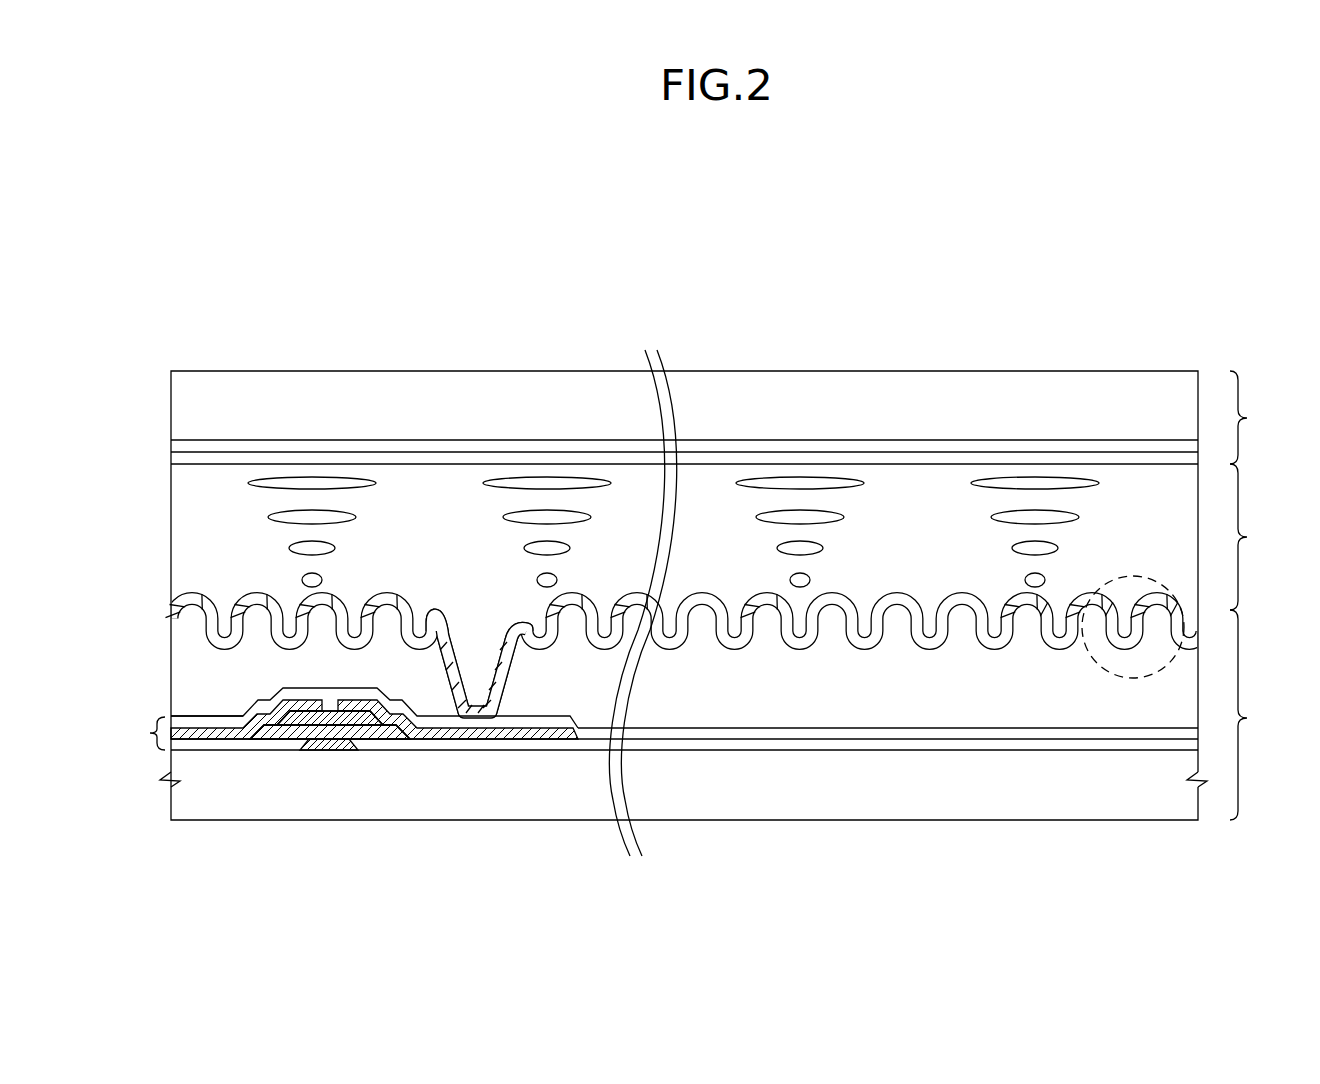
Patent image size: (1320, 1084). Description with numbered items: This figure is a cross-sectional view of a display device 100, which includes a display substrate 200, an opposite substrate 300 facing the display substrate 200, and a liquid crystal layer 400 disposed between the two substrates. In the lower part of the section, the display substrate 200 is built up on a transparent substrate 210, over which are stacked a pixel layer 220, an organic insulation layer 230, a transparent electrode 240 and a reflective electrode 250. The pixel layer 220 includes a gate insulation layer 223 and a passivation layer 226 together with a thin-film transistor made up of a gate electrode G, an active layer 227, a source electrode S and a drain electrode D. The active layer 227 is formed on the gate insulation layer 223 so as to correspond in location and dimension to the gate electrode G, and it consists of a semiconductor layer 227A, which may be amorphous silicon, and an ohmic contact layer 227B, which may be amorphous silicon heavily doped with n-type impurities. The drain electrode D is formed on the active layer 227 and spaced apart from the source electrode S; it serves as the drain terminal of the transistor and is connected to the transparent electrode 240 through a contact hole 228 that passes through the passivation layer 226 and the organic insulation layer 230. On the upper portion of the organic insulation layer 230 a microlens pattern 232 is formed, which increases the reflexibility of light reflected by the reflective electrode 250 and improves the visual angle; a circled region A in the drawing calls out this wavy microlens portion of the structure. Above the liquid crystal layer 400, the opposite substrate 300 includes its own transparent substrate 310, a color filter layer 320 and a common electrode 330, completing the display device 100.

The display device 100 is at (693, 293).
The display substrate 200 is at (726, 715).
The transparent substrate 210 is at (1140, 775).
The pixel layer 220 is at (177, 733).
The gate insulation layer 223 is at (747, 742).
The passivation layer 226 is at (817, 732).
The active layer 227 is at (333, 857).
The semiconductor layer 227A is at (368, 740).
The ohmic contact layer 227B is at (380, 728).
The contact hole 228 is at (478, 632).
The organic insulation layer 230 is at (889, 710).
The microlens pattern 232 is at (1095, 643).
The transparent electrode 240 is at (962, 637).
The reflective electrode 250 is at (1037, 637).
The opposite substrate 300 is at (1255, 417).
The transparent substrate 310 is at (945, 390).
The color filter layer 320 is at (1013, 447).
The common electrode 330 is at (1082, 460).
The liquid crystal layer 400 is at (764, 537).
The enlarged region A is at (1122, 580).
The source electrode S is at (242, 742).
The gate electrode G is at (318, 752).
The drain electrode D is at (512, 742).